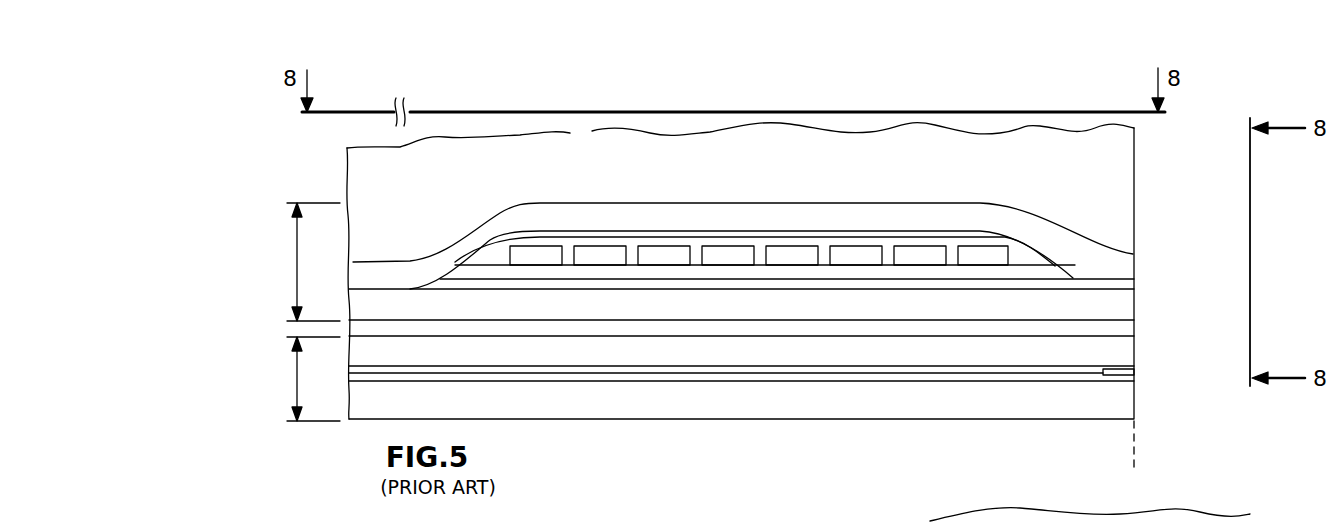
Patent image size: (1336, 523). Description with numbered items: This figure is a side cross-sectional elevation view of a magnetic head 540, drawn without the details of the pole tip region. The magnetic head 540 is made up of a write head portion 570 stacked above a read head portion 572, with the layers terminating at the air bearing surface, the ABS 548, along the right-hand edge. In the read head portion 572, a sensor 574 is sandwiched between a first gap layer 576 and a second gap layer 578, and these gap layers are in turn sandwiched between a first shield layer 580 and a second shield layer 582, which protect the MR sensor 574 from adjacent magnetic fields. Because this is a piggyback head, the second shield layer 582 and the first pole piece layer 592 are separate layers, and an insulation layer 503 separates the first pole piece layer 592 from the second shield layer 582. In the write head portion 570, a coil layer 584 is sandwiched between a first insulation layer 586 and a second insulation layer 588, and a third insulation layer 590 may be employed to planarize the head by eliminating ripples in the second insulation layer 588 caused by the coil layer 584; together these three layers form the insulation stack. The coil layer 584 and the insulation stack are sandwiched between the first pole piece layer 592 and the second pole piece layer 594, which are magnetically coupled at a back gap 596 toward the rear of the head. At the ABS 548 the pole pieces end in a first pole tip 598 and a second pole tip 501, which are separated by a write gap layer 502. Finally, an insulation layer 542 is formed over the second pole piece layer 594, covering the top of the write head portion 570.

The magnetic head 540 is at (326, 153).
The insulation layer 542 is at (1118, 155).
The ABS 548 is at (1136, 463).
The write head portion 570 is at (290, 270).
The read head portion 572 is at (290, 381).
The sensor 574 is at (1134, 371).
The first gap layer 576 is at (808, 380).
The second gap layer 578 is at (773, 364).
The first shield layer 580 is at (932, 403).
The second shield layer 582 is at (993, 352).
The coil layer 584 is at (790, 253).
The first insulation layer 586 is at (702, 278).
The second insulation layer 588 is at (1025, 257).
The third insulation layer 590 is at (577, 232).
The first pole piece layer 592 is at (1055, 310).
The second pole piece layer 594 is at (924, 213).
The back gap 596 is at (383, 262).
The first pole tip 598 is at (1135, 310).
The second pole tip 501 is at (1128, 262).
The write gap layer 502 is at (1134, 282).
The insulation layer 503 is at (632, 331).